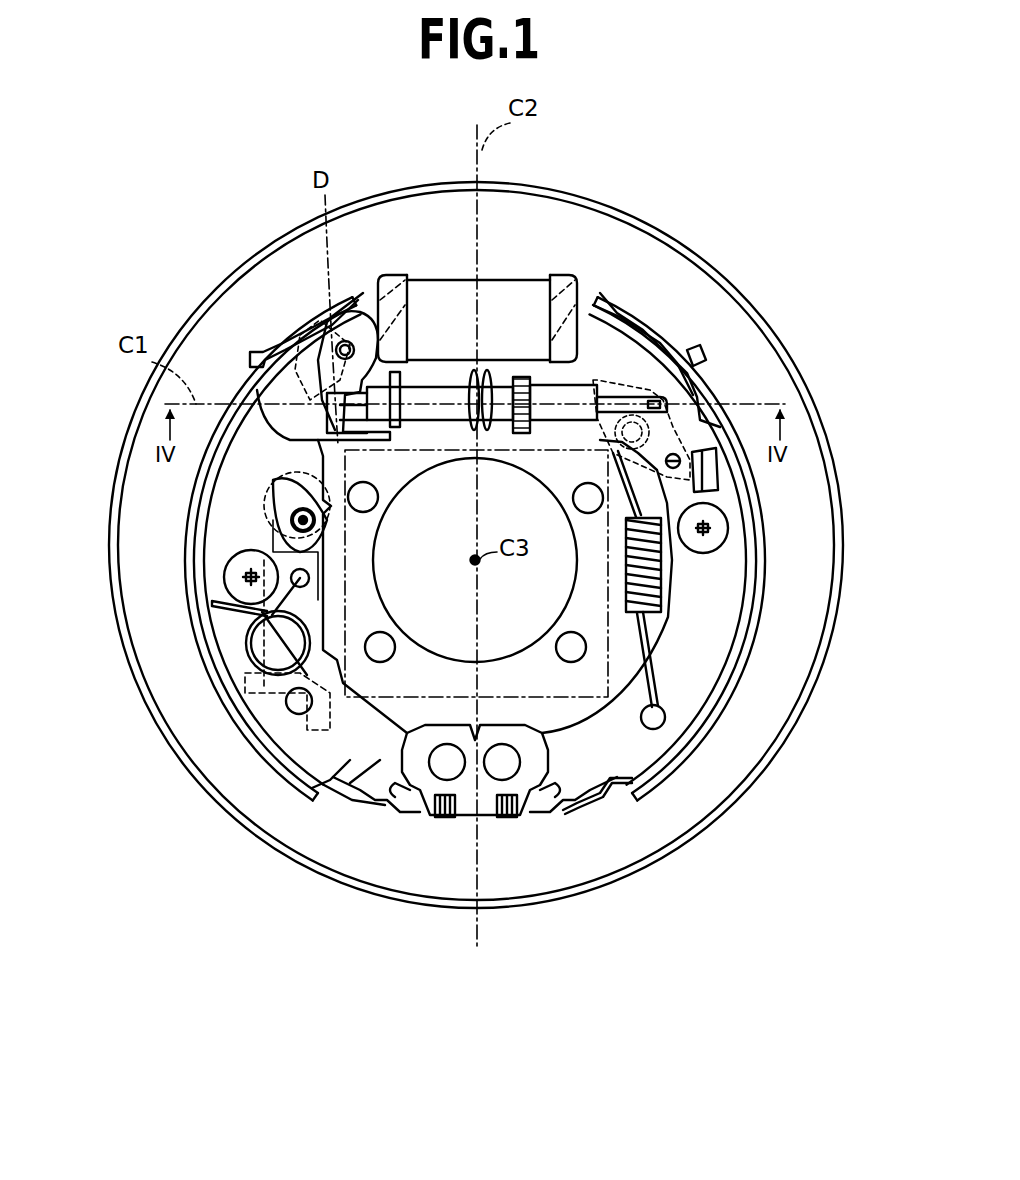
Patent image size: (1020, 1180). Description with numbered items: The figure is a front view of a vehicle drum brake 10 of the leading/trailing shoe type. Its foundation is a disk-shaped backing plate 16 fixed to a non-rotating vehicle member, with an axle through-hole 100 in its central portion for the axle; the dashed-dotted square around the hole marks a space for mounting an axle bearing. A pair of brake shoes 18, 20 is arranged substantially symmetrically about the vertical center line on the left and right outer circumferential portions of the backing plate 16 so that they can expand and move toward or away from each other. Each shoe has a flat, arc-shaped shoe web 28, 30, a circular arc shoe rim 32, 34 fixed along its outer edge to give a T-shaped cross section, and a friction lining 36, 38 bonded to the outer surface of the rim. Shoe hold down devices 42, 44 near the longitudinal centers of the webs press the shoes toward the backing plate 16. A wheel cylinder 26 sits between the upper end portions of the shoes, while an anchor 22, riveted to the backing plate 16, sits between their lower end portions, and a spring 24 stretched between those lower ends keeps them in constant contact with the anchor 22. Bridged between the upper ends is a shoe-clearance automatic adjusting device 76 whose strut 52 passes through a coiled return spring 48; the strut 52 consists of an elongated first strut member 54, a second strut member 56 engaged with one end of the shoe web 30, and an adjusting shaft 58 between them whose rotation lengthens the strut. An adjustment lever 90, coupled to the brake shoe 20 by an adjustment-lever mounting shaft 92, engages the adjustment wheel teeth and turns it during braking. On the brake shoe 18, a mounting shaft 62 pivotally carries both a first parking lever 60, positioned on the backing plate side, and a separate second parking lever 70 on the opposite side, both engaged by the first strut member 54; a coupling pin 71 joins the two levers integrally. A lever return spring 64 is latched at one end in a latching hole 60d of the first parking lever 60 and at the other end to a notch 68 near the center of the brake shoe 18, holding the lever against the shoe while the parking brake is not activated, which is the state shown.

The vehicle drum brake 10 is at (612, 935).
The backing plate 16 is at (356, 880).
The brake shoe 18 is at (285, 770).
The brake shoe 20 is at (668, 787).
The anchor 22 is at (487, 813).
The spring 24 is at (518, 817).
The wheel cylinder 26 is at (438, 290).
The shoe web 28 is at (333, 785).
The shoe web 30 is at (567, 767).
The shoe rim 32 is at (275, 753).
The shoe rim 34 is at (722, 683).
The lining 36 is at (270, 782).
The lining 38 is at (712, 717).
The shoe hold down device 42 is at (212, 603).
The shoe hold down device 44 is at (725, 545).
The return spring 48 is at (703, 352).
The strut 52 is at (500, 443).
The first strut member 54 is at (333, 427).
The second strut member 56 is at (556, 396).
The adjusting shaft 58 is at (494, 378).
The first parking lever 60 is at (340, 572).
The latching hole 60d is at (224, 578).
The mounting shaft 62 is at (347, 342).
The lever return spring 64 is at (247, 657).
The notch 68 is at (291, 580).
The second parking lever 70 is at (347, 337).
The coupling pin 71 is at (292, 518).
The shoe-clearance automatic adjusting device 76 is at (443, 393).
The adjustment lever 90 is at (680, 464).
The adjustment-lever mounting shaft 92 is at (715, 530).
The axle through-hole 100 is at (443, 818).